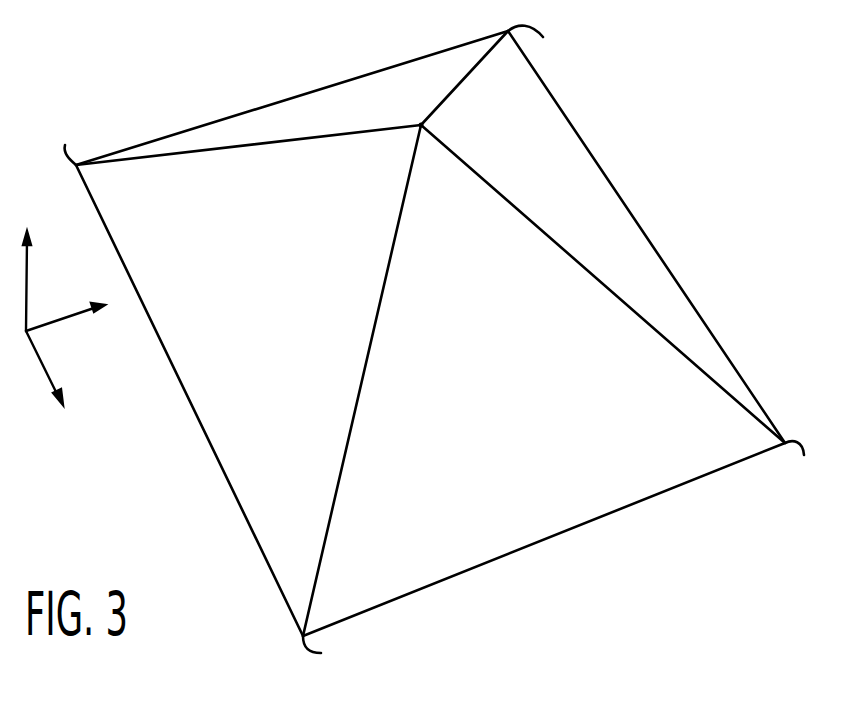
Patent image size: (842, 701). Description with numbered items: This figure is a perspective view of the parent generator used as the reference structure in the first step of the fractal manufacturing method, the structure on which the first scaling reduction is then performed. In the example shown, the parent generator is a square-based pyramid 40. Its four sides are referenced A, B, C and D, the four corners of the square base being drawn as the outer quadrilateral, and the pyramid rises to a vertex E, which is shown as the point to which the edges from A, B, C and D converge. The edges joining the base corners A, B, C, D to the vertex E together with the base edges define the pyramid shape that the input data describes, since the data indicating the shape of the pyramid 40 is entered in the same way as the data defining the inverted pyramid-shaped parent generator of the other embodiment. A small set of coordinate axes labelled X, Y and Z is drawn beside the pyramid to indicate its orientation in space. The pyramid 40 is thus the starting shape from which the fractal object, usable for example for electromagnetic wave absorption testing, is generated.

The pyramid 40 is at (663, 144).
The side A is at (79, 143).
The side B is at (329, 651).
The side C is at (791, 465).
The side D is at (540, 43).
The vertex E is at (418, 122).
The X axis X is at (51, 384).
The Y axis Y is at (76, 314).
The Z axis Z is at (26, 267).